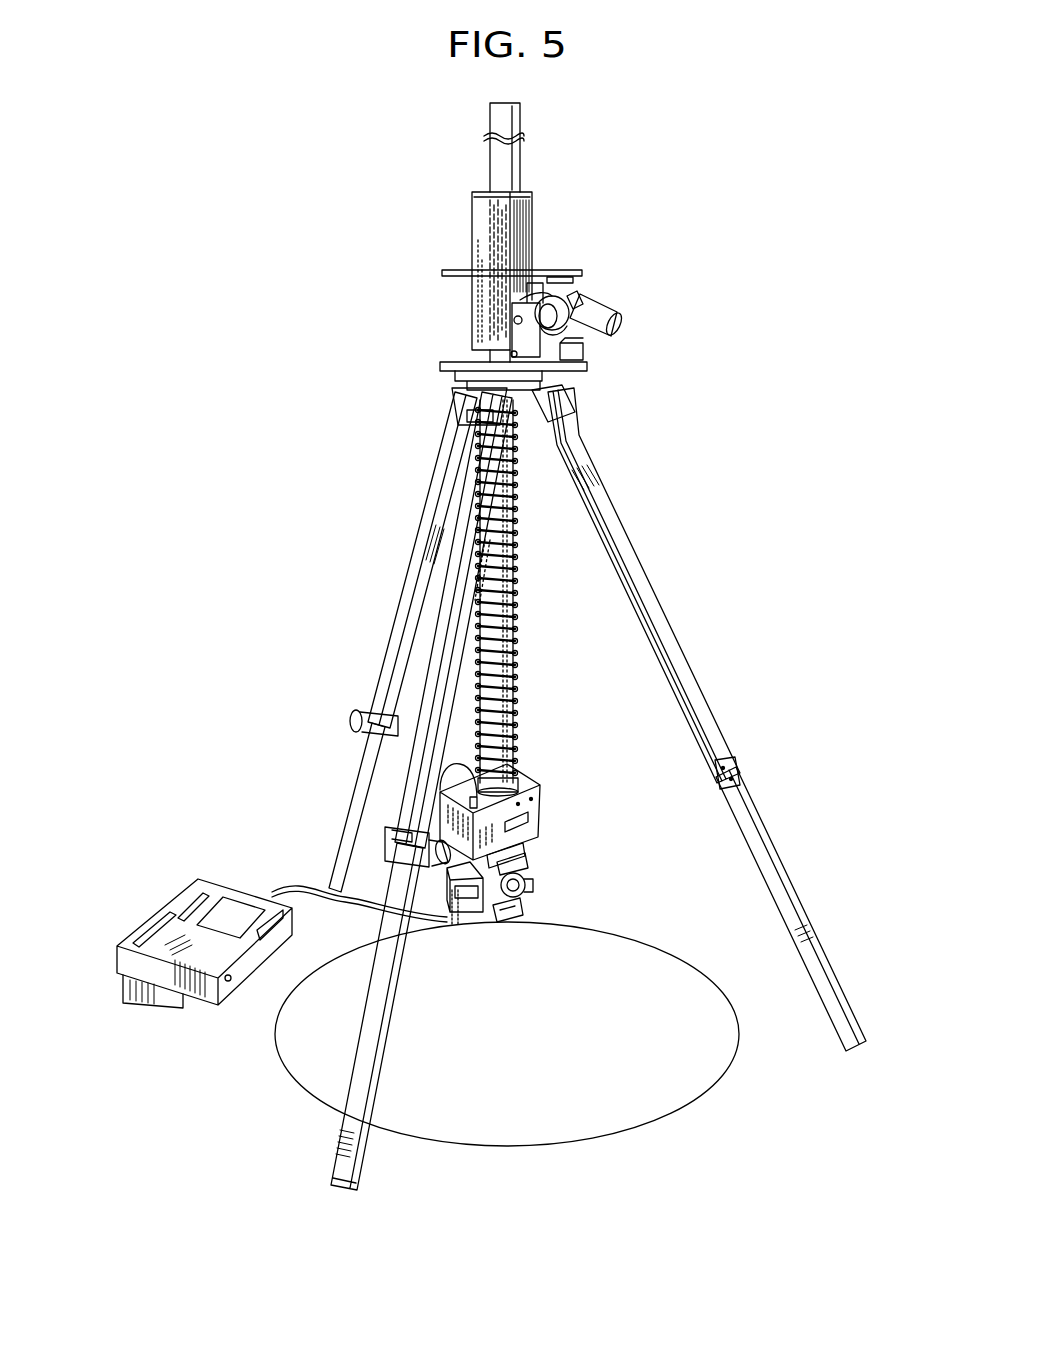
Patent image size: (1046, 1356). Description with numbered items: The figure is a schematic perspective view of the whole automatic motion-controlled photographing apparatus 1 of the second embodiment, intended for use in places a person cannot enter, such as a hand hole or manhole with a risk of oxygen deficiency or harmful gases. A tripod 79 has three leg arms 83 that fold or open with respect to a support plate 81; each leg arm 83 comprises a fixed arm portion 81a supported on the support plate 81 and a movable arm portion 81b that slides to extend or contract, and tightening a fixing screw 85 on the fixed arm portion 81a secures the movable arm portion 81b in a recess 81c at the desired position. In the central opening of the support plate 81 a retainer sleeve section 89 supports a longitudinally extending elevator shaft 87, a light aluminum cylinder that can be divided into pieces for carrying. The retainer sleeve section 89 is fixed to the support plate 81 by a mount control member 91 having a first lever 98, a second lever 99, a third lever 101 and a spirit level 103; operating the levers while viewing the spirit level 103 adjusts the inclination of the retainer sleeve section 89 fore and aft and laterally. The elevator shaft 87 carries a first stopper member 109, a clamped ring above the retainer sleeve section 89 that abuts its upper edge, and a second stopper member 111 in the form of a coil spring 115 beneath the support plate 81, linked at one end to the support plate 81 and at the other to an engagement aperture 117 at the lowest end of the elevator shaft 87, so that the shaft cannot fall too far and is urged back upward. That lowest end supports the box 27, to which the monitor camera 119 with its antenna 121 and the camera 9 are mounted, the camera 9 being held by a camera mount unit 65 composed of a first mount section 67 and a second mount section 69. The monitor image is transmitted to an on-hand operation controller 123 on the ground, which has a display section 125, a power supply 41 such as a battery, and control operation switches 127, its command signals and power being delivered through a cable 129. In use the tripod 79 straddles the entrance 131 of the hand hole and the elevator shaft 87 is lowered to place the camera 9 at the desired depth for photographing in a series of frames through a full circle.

The automatic motion-controlled photographing apparatus 1 is at (453, 208).
The camera 9 is at (509, 921).
The box 27 is at (542, 822).
The power supply 41 is at (150, 1002).
The camera mount unit 65 is at (589, 878).
The first mount section 67 is at (529, 857).
The second mount section 69 is at (532, 873).
The tripod 79 is at (661, 599).
The support plate 81 is at (558, 787).
The fixed arm portion 81a is at (398, 622).
The movable arm portion 81b is at (395, 697).
The recess 81c is at (441, 613).
The leg arms 83 is at (558, 787).
The fixing screw 85 is at (352, 722).
The elevator shaft 87 is at (470, 352).
The retainer sleeve section 89 is at (533, 230).
The mount control member 91 is at (565, 292).
The first lever 98 is at (567, 358).
The second lever 99 is at (575, 330).
The third lever 101 is at (625, 325).
The spirit level 103 is at (573, 271).
The first stopper member 109 is at (525, 186).
The second stopper member 111 is at (546, 591).
The coil spring 115 is at (518, 690).
The engagement aperture 117 is at (540, 788).
The monitor camera 119 is at (466, 896).
The antenna 121 is at (455, 918).
The on-hand operation controller 123 is at (177, 963).
The display section 125 is at (232, 905).
The control operation switches 127 is at (165, 910).
The cable 129 is at (333, 900).
The entrance 131 is at (640, 1112).